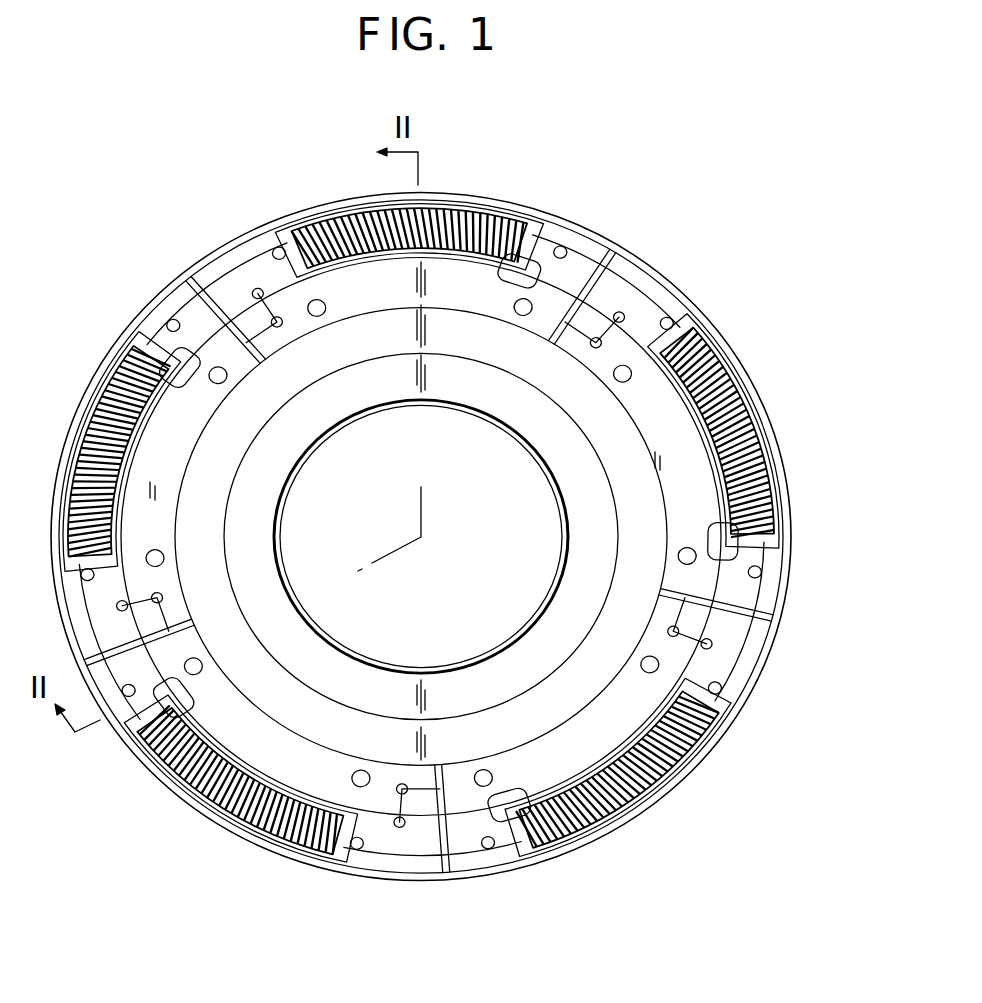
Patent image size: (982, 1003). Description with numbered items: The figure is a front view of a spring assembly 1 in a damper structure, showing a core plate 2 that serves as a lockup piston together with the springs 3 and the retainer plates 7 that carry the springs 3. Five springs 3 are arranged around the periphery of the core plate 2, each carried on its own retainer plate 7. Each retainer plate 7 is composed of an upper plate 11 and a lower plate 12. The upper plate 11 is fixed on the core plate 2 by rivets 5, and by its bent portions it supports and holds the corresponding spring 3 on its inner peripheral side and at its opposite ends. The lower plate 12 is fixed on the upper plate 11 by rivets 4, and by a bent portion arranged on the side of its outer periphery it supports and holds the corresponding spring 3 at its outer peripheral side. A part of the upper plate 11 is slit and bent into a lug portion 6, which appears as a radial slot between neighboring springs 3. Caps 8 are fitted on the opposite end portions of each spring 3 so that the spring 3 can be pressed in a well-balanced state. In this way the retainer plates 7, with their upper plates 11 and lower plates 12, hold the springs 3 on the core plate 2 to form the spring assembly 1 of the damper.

The spring assembly 1 is at (603, 192).
The core plate 2 is at (528, 425).
The spring 3 is at (493, 222).
The rivet 4 is at (312, 303).
The rivet 5 is at (260, 307).
The lug portion 6 is at (233, 323).
The retainer plate 7 is at (770, 604).
The cap 8 is at (683, 347).
The upper plate 11 is at (737, 553).
The lower plate 12 is at (773, 483).